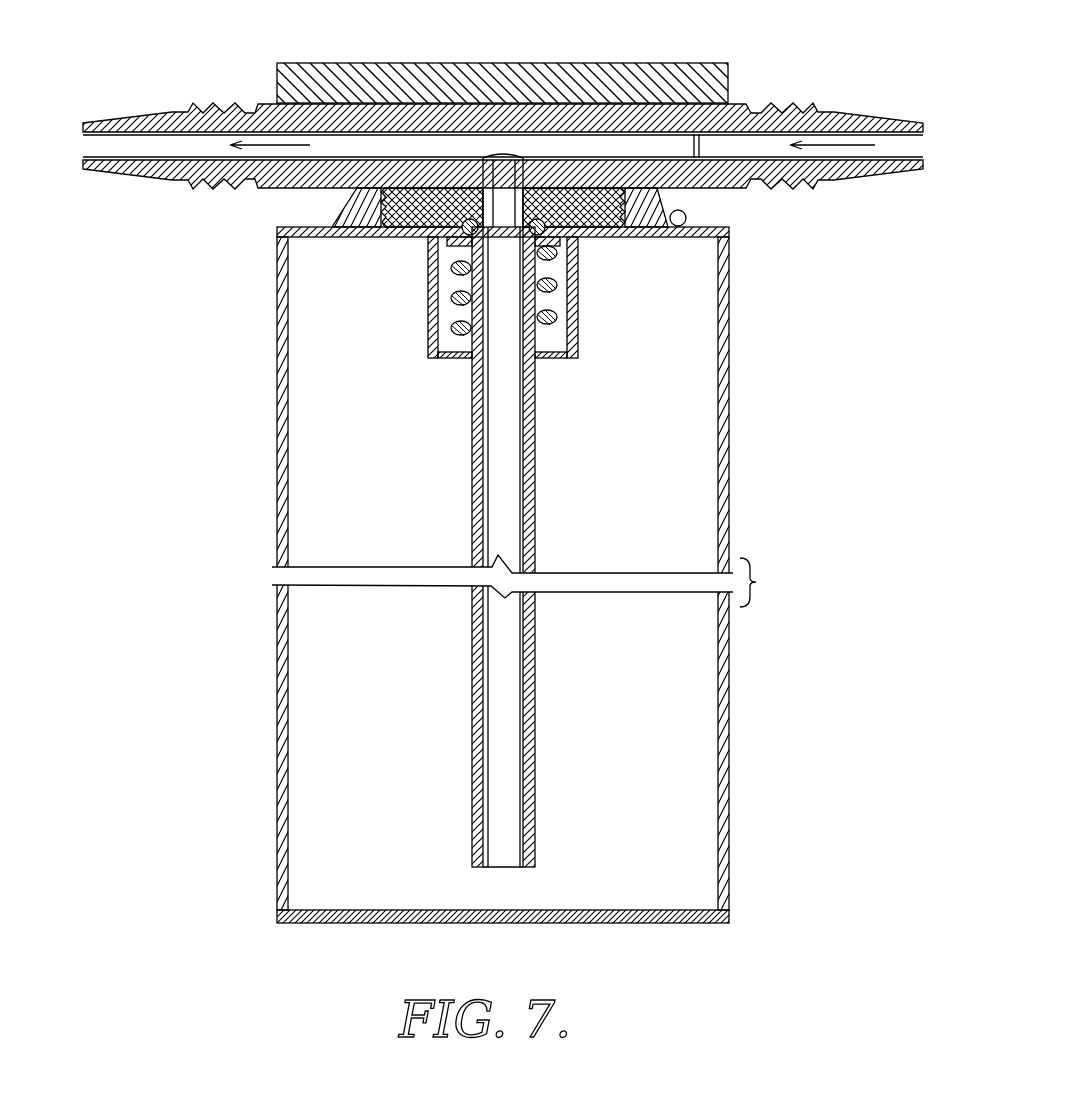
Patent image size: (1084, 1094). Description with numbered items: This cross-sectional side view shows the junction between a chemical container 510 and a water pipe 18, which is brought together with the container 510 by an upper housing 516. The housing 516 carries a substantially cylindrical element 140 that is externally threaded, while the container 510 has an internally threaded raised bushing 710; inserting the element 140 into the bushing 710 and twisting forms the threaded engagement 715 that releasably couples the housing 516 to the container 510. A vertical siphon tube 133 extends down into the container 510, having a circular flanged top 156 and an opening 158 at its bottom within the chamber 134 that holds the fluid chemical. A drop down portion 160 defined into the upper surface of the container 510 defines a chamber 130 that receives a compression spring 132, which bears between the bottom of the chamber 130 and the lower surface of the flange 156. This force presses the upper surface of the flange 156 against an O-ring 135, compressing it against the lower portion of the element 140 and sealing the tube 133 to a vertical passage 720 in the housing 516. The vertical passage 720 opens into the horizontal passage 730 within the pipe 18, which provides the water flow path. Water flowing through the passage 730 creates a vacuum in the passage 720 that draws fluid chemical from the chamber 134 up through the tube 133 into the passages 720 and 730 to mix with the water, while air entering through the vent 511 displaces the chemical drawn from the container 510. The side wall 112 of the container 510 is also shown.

The upper housing 516 is at (337, 50).
The water pipe 18 is at (268, 95).
The vertical passage 720 is at (505, 158).
The horizontal passage 730 is at (635, 145).
The cylindrical element 140 is at (620, 230).
The threaded engagement 715 is at (658, 200).
The raised bushing 710 is at (685, 237).
The container 510 is at (457, 581).
The vent 511 is at (308, 226).
The side wall 112 is at (277, 400).
The chamber 134 is at (340, 908).
The chamber 130 is at (509, 316).
The drop down portion 160 is at (443, 358).
The O-ring 135 is at (452, 237).
The circular flanged top 156 is at (450, 268).
The compression spring 132 is at (558, 285).
The siphon tube 133 is at (532, 564).
The opening 158 is at (505, 868).